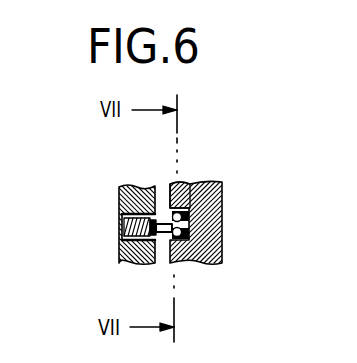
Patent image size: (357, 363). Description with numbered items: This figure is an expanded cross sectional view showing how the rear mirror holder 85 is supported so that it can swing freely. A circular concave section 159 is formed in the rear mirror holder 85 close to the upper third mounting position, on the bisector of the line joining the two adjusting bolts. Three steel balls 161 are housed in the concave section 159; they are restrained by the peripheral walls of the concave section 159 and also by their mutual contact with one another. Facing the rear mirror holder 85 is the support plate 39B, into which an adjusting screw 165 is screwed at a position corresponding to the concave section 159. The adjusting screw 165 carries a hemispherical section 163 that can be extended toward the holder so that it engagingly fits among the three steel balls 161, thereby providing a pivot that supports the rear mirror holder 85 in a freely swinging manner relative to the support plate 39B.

The support plate 39B is at (137, 201).
The circular concave section 159 is at (179, 185).
The rear mirror holder 85 is at (223, 228).
The adjusting screw 165 is at (123, 229).
The hemispherical section 163 is at (167, 236).
The steel balls 161 is at (190, 262).